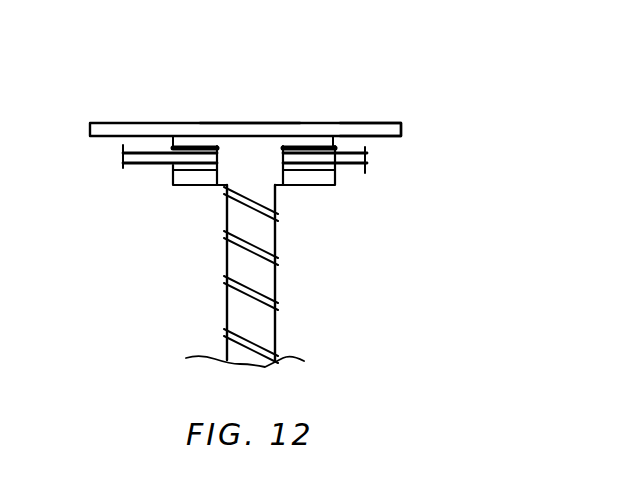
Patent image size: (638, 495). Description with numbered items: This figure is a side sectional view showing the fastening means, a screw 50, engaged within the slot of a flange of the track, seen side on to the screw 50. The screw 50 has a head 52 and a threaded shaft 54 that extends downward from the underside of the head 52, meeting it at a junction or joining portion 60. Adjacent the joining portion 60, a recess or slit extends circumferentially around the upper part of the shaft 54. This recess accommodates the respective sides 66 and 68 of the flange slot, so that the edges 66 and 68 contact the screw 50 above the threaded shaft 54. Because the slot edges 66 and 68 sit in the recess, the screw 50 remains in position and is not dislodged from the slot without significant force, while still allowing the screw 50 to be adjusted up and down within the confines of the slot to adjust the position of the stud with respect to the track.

The screw 50 is at (90, 122).
The head 52 is at (381, 127).
The threaded shaft 54 is at (281, 290).
The joining portion 60 is at (229, 130).
The side of slot 66 is at (208, 186).
The side of slot 68 is at (293, 187).